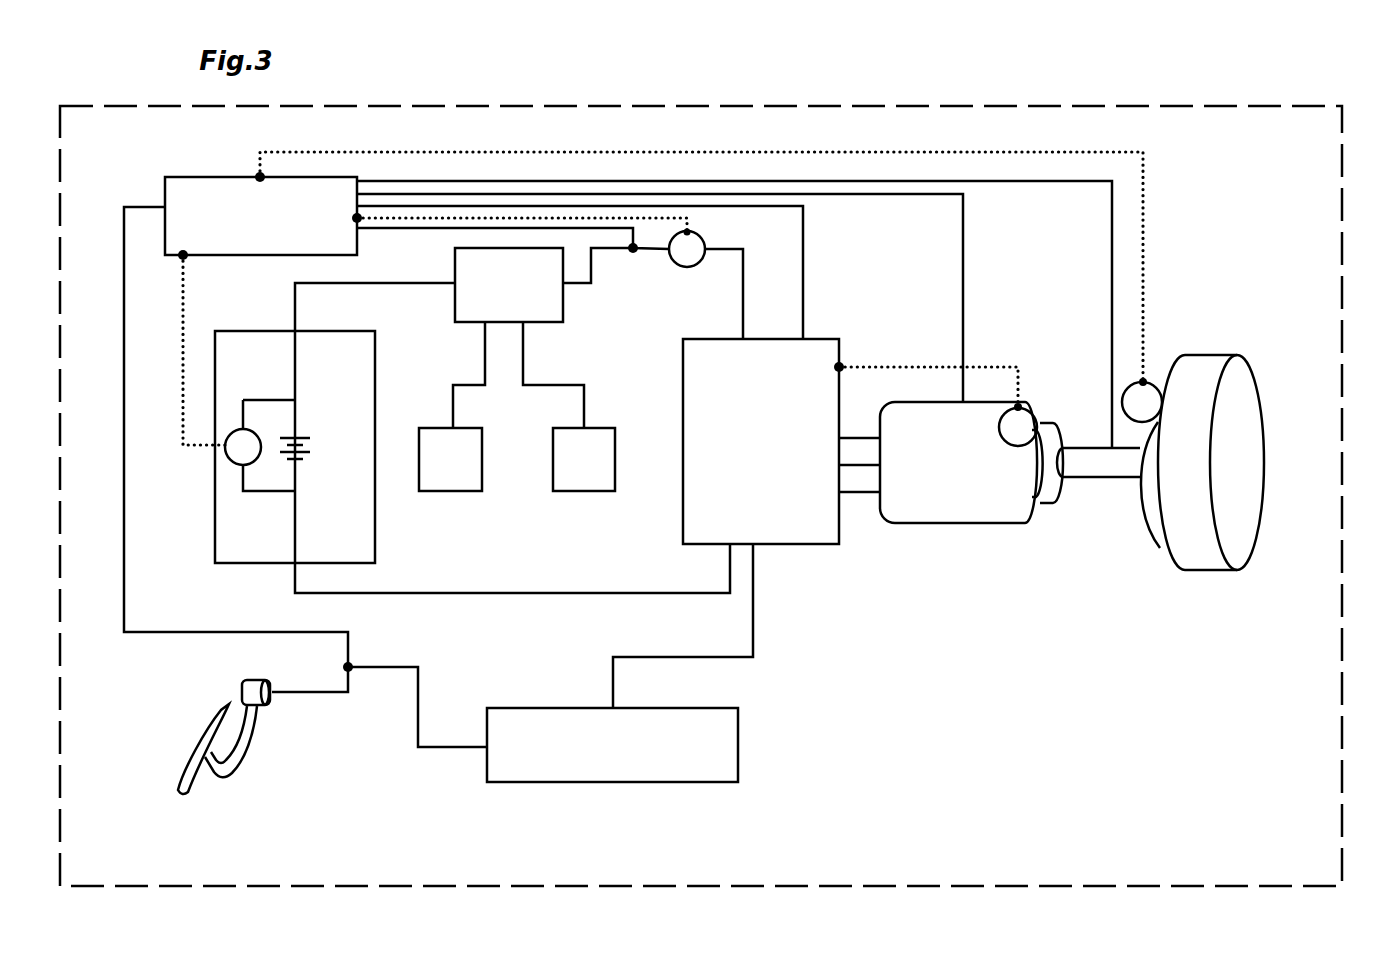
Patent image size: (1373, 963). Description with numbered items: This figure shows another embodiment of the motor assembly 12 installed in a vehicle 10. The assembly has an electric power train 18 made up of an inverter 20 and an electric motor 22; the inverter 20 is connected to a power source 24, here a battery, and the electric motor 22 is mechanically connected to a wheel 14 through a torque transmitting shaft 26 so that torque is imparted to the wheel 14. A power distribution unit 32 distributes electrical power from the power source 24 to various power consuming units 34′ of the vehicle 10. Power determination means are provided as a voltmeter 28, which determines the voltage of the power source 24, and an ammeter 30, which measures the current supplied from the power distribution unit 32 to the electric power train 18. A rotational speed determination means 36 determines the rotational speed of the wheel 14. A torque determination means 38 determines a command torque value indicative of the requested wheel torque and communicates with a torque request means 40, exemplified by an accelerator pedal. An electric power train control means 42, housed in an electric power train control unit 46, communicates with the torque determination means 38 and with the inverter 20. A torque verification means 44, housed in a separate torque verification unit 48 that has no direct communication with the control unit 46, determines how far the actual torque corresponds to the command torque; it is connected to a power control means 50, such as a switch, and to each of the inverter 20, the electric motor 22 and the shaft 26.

The vehicle 10 is at (1303, 92).
The motor assembly 12 is at (1200, 179).
The wheel 14 is at (1250, 404).
The electric power train 18 is at (1104, 316).
The inverter 20 is at (745, 455).
The electric motor 22 is at (932, 477).
The power source 24 is at (320, 402).
The torque transmitting shaft 26 is at (1115, 465).
The voltmeter 28 is at (242, 429).
The ammeter 30 is at (700, 240).
The power distribution unit 32 is at (494, 298).
The power consuming unit 34′ is at (436, 474).
The rotational speed determination means 36 is at (1122, 402).
The torque determination means 38 is at (252, 681).
The torque request means 40 is at (200, 766).
The electric power train control means 42 is at (597, 760).
The torque verification means 44 is at (246, 230).
The electric power train control unit 46 is at (752, 750).
The torque verification unit 48 is at (228, 170).
The power control means 50 is at (633, 254).